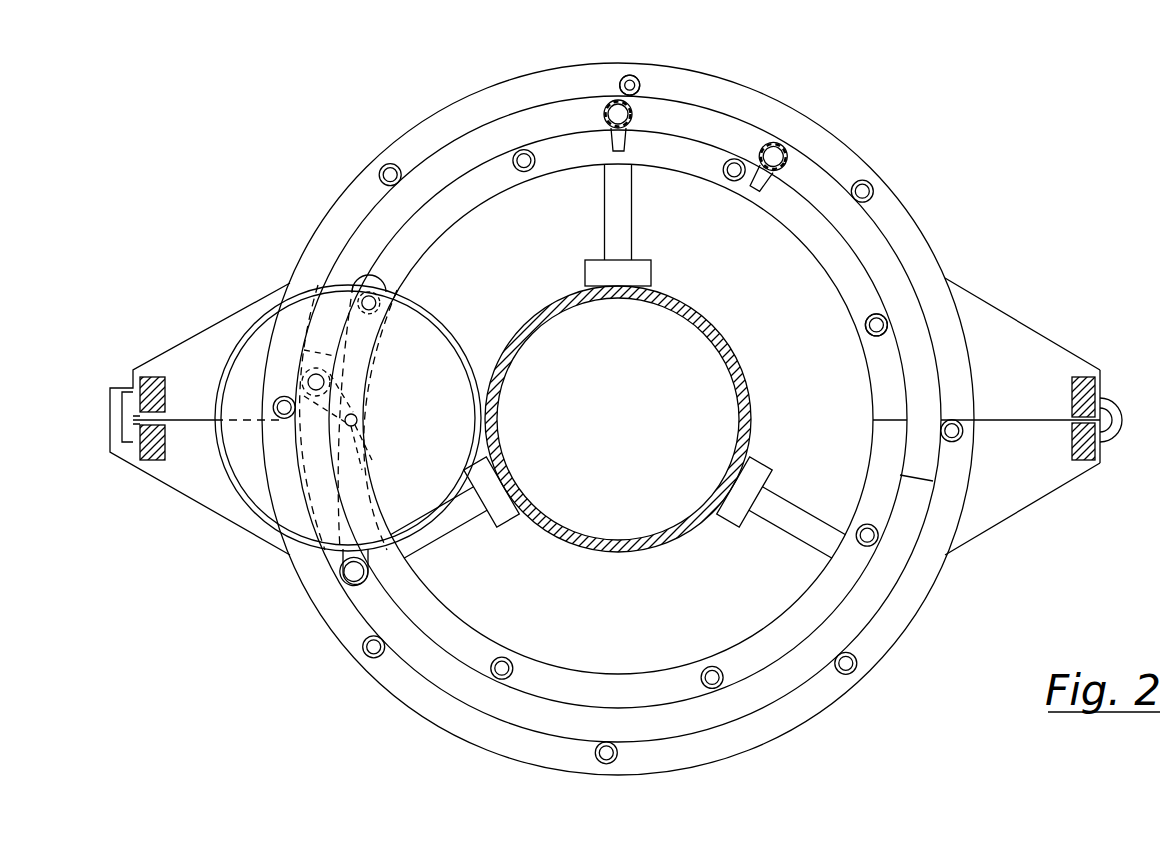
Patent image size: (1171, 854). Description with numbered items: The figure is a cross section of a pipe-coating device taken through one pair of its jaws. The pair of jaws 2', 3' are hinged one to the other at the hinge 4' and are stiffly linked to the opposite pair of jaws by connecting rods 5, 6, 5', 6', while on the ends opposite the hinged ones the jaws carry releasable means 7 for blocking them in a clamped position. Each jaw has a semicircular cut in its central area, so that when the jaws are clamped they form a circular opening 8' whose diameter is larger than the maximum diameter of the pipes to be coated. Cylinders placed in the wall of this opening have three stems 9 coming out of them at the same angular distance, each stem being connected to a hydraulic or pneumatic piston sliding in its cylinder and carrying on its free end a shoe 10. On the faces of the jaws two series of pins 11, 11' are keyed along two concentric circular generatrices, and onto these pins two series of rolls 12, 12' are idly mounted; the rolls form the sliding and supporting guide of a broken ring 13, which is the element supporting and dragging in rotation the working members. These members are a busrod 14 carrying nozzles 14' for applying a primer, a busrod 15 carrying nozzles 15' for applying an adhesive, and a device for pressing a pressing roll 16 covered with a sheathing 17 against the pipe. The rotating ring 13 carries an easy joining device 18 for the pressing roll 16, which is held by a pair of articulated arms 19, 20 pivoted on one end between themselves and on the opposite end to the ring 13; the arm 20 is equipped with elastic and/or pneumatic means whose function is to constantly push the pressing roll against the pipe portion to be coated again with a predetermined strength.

The jaw 2' is at (1022, 321).
The jaw 3' is at (1022, 512).
The hinge 4' is at (1133, 398).
The connecting rod 5 is at (1093, 361).
The connecting rod 6 is at (1104, 471).
The connecting rod 5' is at (155, 357).
The connecting rod 6' is at (132, 478).
The releasable blocking means 7 is at (109, 420).
The circular opening 8' is at (631, 419).
The stem 9 is at (801, 532).
The shoe 10 is at (731, 505).
The pin 11 is at (656, 56).
The roll 12 is at (683, 64).
The pin 11' is at (930, 278).
The roll 12' is at (838, 356).
The broken ring 13 is at (430, 663).
The busrod 14 is at (816, 131).
The nozzle 14' is at (747, 218).
The busrod 15 is at (599, 74).
The nozzle 15' is at (648, 181).
The pressing roll 16 is at (262, 490).
The sheathing 17 is at (436, 316).
The easy joining device 18 is at (360, 421).
The articulated arm 19 is at (357, 490).
The articulated arm 20 is at (372, 388).